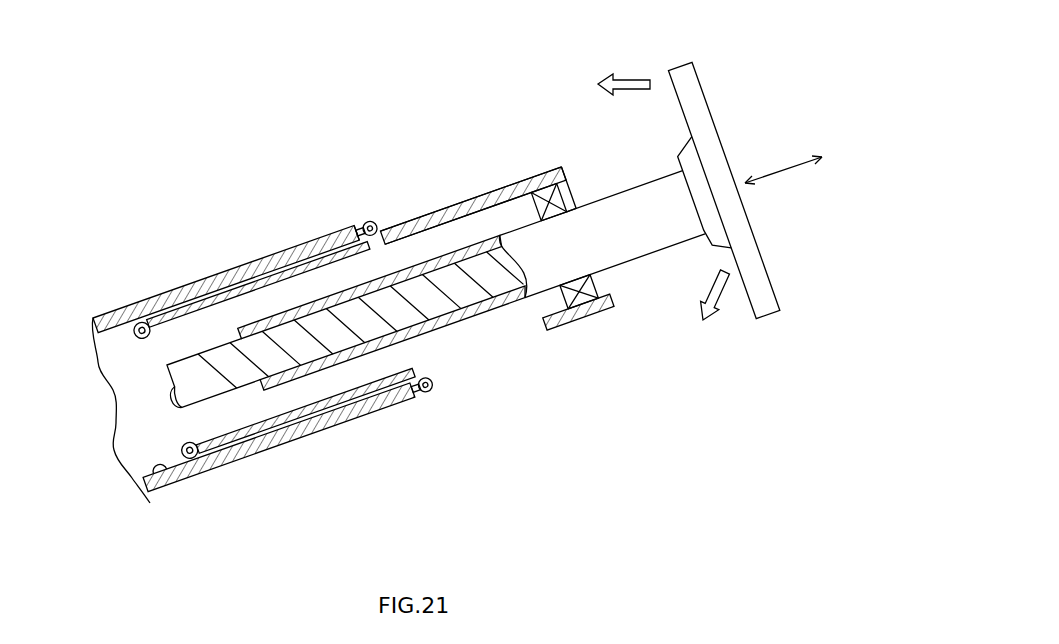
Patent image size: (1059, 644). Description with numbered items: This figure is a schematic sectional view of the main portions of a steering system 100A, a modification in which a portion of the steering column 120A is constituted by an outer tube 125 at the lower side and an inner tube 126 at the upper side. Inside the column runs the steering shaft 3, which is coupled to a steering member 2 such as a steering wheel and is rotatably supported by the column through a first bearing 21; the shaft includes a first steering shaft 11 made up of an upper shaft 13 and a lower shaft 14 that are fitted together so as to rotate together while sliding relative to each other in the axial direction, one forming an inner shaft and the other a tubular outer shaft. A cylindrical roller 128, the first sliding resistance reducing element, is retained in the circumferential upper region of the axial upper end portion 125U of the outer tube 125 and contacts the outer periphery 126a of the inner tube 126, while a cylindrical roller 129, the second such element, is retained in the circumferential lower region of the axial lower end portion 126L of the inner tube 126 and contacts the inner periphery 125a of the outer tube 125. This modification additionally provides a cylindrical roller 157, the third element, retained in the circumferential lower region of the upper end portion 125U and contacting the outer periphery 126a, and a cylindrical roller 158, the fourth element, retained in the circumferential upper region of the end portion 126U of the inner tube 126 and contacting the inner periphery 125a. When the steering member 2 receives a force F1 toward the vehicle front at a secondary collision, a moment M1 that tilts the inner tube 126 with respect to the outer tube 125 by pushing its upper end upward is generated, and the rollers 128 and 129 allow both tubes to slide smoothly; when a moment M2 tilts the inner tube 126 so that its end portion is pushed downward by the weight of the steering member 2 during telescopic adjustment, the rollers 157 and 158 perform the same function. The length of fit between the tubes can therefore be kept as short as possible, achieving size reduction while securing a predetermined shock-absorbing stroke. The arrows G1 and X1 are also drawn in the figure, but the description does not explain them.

The steering member 2 is at (762, 264).
The steering shaft 3 is at (652, 182).
The first steering shaft 11 is at (548, 422).
The upper shaft 13 is at (483, 308).
The lower shaft 14 is at (388, 322).
The first bearing 21 is at (588, 306).
The steering system 100A is at (718, 85).
The steering column 120A is at (505, 187).
The outer tube 125 is at (228, 272).
The axial upper end portion of the outer tube 125U is at (352, 231).
The inner periphery of the outer tube 125a is at (150, 494).
The inner tube 126 is at (460, 204).
The outer periphery of the inner tube 126a is at (412, 226).
The axial upper end portion of the inner tube 126U is at (556, 172).
The axial lower end portion of the inner tube 126L is at (216, 452).
The cylindrical roller 128 is at (372, 222).
The cylindrical roller 129 is at (189, 458).
The cylindrical roller 157 is at (426, 392).
The cylindrical roller 158 is at (136, 323).
The force F1 is at (632, 76).
The gravity direction G1 is at (702, 289).
The axial direction X1 is at (780, 167).
The moment M1 is at (567, 160).
The moment M2 is at (624, 312).